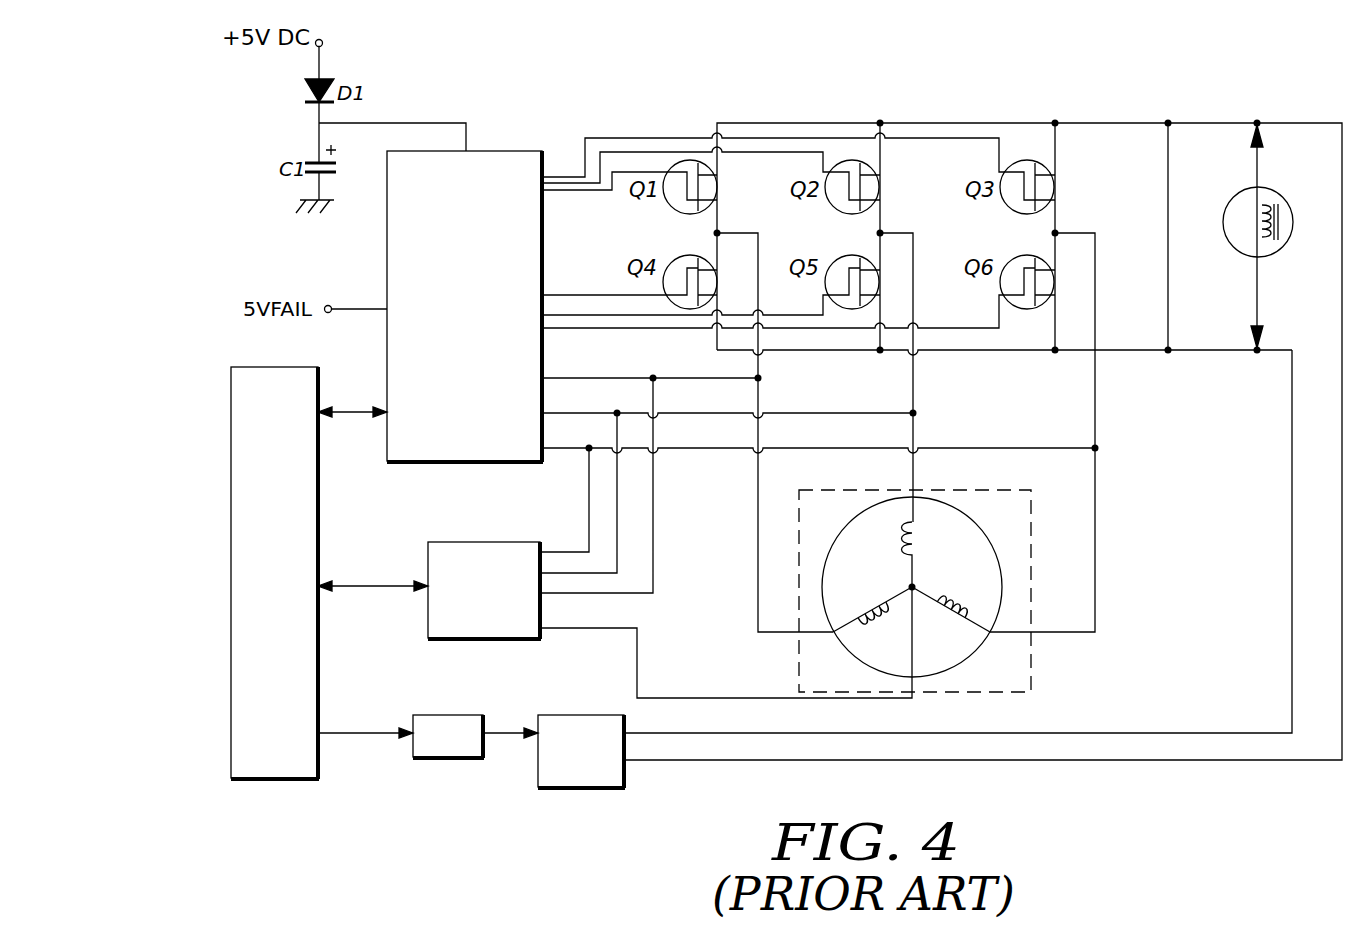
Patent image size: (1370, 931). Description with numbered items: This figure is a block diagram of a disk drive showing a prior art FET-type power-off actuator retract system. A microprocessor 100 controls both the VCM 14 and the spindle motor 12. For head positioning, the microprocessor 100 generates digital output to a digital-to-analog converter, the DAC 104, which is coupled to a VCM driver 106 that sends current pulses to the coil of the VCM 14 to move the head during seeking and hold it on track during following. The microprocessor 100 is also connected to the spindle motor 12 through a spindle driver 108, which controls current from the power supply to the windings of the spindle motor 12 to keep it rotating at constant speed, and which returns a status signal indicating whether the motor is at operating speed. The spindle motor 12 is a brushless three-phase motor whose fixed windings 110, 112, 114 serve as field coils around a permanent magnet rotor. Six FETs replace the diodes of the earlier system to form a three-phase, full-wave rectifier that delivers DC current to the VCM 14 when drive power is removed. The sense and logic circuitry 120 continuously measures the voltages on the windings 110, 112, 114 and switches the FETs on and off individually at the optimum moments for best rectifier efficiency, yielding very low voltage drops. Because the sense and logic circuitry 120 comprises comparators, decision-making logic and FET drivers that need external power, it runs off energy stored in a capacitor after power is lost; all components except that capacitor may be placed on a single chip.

The spindle motor 12 is at (960, 638).
The VCM 14 is at (1283, 197).
The microprocessor 100 is at (231, 500).
The digital-to-analog converter (DAC) 104 is at (452, 715).
The VCM driver 106 is at (568, 715).
The spindle driver 108 is at (490, 542).
The motor winding 110 is at (873, 623).
The motor winding 112 is at (915, 540).
The motor winding 114 is at (963, 594).
The sense and logic circuitry 120 is at (515, 150).